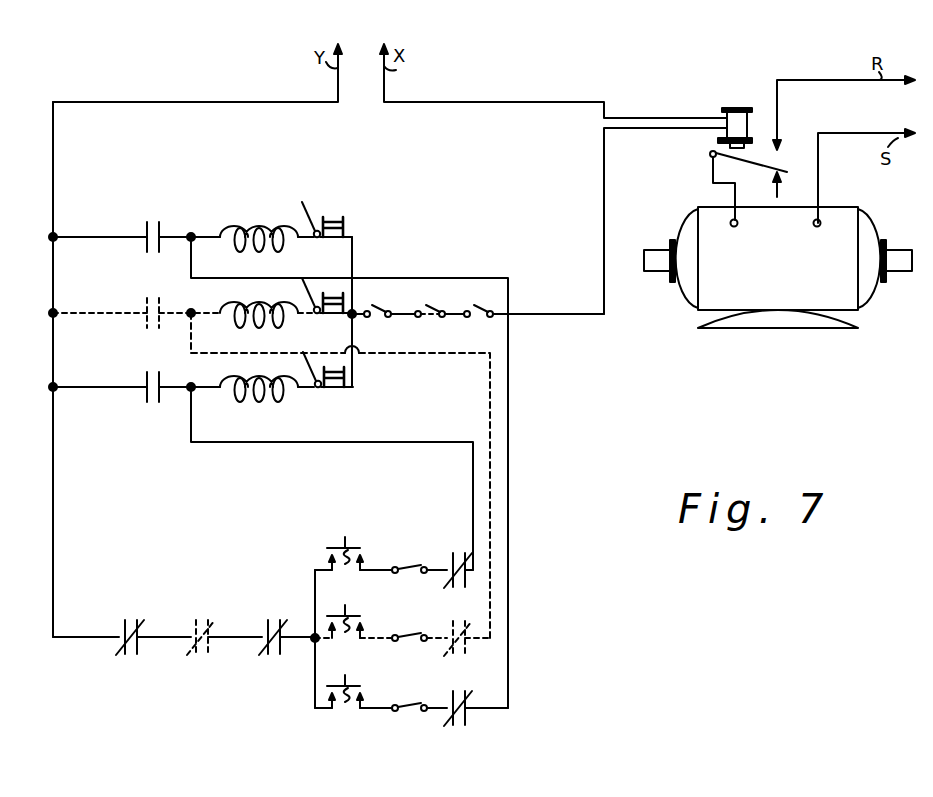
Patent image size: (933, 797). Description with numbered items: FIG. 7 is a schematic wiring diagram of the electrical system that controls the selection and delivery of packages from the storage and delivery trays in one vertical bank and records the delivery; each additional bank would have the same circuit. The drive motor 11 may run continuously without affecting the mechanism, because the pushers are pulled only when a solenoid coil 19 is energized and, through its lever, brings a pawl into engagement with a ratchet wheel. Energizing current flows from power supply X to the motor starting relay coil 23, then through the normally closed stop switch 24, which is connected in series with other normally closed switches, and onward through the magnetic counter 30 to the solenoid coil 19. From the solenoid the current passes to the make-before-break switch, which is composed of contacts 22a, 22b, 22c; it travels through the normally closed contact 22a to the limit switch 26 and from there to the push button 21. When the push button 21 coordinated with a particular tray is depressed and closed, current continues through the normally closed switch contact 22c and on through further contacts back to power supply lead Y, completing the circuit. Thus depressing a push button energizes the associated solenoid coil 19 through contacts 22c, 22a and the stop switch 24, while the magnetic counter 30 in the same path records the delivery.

The drive motor 11 is at (778, 267).
The solenoid coil 19 is at (243, 398).
The push button 21 is at (356, 550).
The switch contact 22a is at (466, 590).
The switch contact 22b is at (150, 404).
The switch contact 22c is at (134, 622).
The motor starting relay coil 23 is at (740, 106).
The normally closed stop switch 24 is at (373, 318).
The limit switch 26 is at (407, 568).
The magnetic counter 30 is at (334, 389).